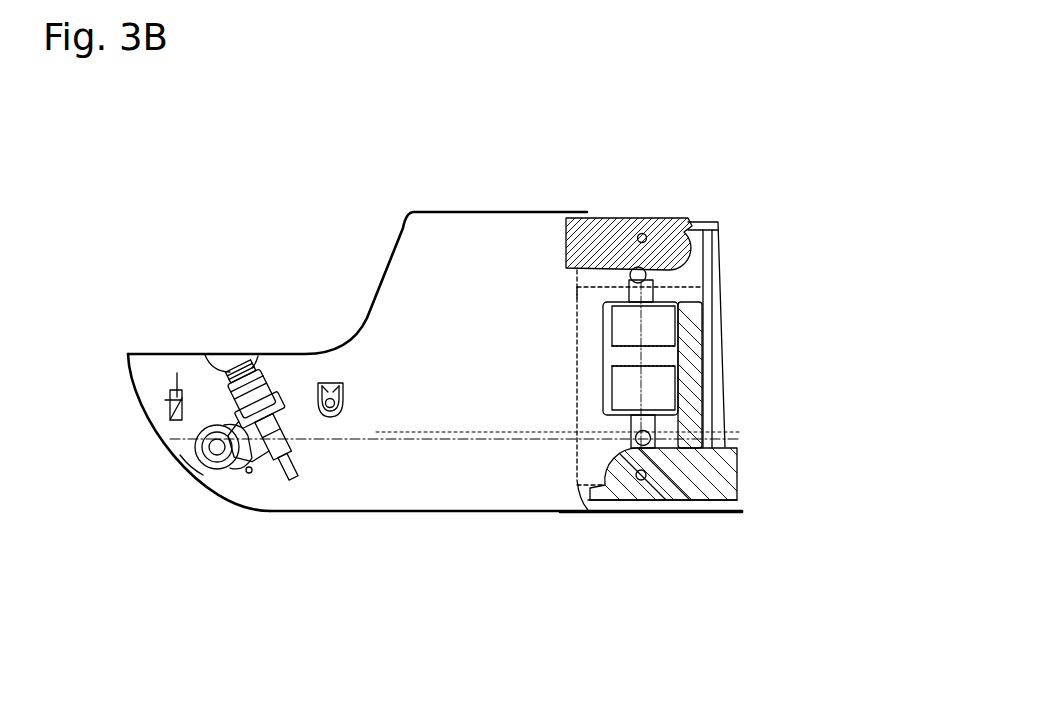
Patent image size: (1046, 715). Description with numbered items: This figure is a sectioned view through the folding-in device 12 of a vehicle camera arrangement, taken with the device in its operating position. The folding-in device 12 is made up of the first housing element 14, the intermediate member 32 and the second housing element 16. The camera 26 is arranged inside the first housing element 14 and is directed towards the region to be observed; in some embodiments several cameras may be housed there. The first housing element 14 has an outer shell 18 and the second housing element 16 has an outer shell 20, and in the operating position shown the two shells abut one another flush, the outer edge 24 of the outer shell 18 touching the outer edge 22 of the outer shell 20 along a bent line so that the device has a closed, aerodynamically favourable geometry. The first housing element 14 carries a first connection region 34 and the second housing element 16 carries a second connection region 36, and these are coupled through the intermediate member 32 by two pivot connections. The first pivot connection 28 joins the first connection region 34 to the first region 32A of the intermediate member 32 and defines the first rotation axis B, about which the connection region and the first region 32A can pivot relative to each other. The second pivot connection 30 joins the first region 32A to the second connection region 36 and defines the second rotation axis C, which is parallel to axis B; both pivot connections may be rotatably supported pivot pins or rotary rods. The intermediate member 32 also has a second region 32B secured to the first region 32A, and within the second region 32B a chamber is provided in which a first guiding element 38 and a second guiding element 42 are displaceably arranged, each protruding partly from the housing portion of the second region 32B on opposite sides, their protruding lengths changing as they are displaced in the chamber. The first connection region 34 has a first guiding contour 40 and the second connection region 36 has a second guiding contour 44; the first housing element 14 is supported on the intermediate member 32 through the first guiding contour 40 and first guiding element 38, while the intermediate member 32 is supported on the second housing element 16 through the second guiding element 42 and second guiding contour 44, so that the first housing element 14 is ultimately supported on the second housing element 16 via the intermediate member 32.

The folding-in device 12 is at (510, 91).
The first housing element 14 is at (326, 286).
The second housing element 16 is at (762, 225).
The outer shell 18 is at (367, 514).
The outer shell 20 is at (683, 511).
The outer edge 22 is at (594, 527).
The outer edge 24 is at (680, 599).
The camera 26 is at (232, 365).
The first pivot connection 28 is at (676, 196).
The second pivot connection 30 is at (594, 462).
The intermediate member 32 is at (592, 357).
The first region 32A is at (710, 353).
The second region 32B is at (692, 392).
The first connection region 34 is at (620, 232).
The second connection region 36 is at (715, 488).
The first guiding element 38 is at (633, 295).
The first guiding contour 40 is at (668, 270).
The second guiding element 42 is at (650, 425).
The second guiding contour 44 is at (610, 447).
The first rotation axis B is at (646, 238).
The second rotation axis C is at (636, 475).